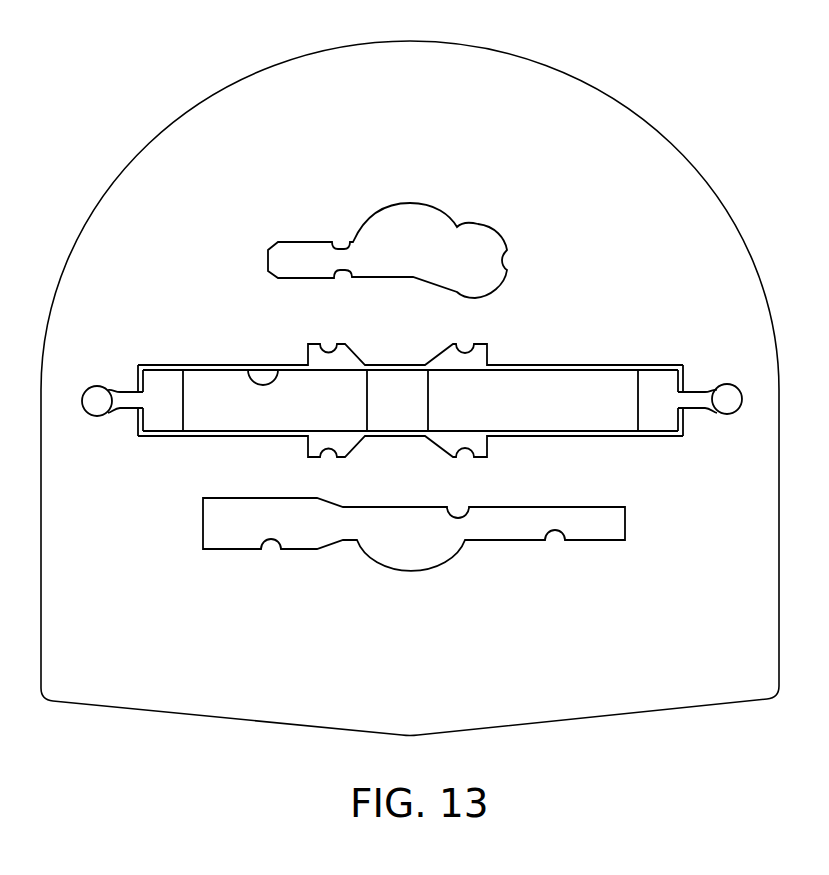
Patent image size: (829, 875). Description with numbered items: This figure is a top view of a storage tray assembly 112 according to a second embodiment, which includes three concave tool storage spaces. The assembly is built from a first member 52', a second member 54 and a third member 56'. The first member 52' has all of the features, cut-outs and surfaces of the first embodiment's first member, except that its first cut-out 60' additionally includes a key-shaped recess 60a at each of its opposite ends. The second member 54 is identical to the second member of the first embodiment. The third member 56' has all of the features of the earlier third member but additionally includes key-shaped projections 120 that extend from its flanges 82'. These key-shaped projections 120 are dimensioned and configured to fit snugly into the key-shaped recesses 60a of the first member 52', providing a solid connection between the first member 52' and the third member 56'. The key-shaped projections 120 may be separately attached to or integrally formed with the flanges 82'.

The storage tray assembly 112 is at (650, 63).
The first member 52' is at (410, 388).
The second member 54 is at (385, 232).
The third member 56' is at (412, 392).
The first cut-out 60' is at (257, 354).
The key-shaped recess 60a is at (103, 390).
The flange 82' is at (417, 374).
The key-shaped projection 120 is at (105, 404).